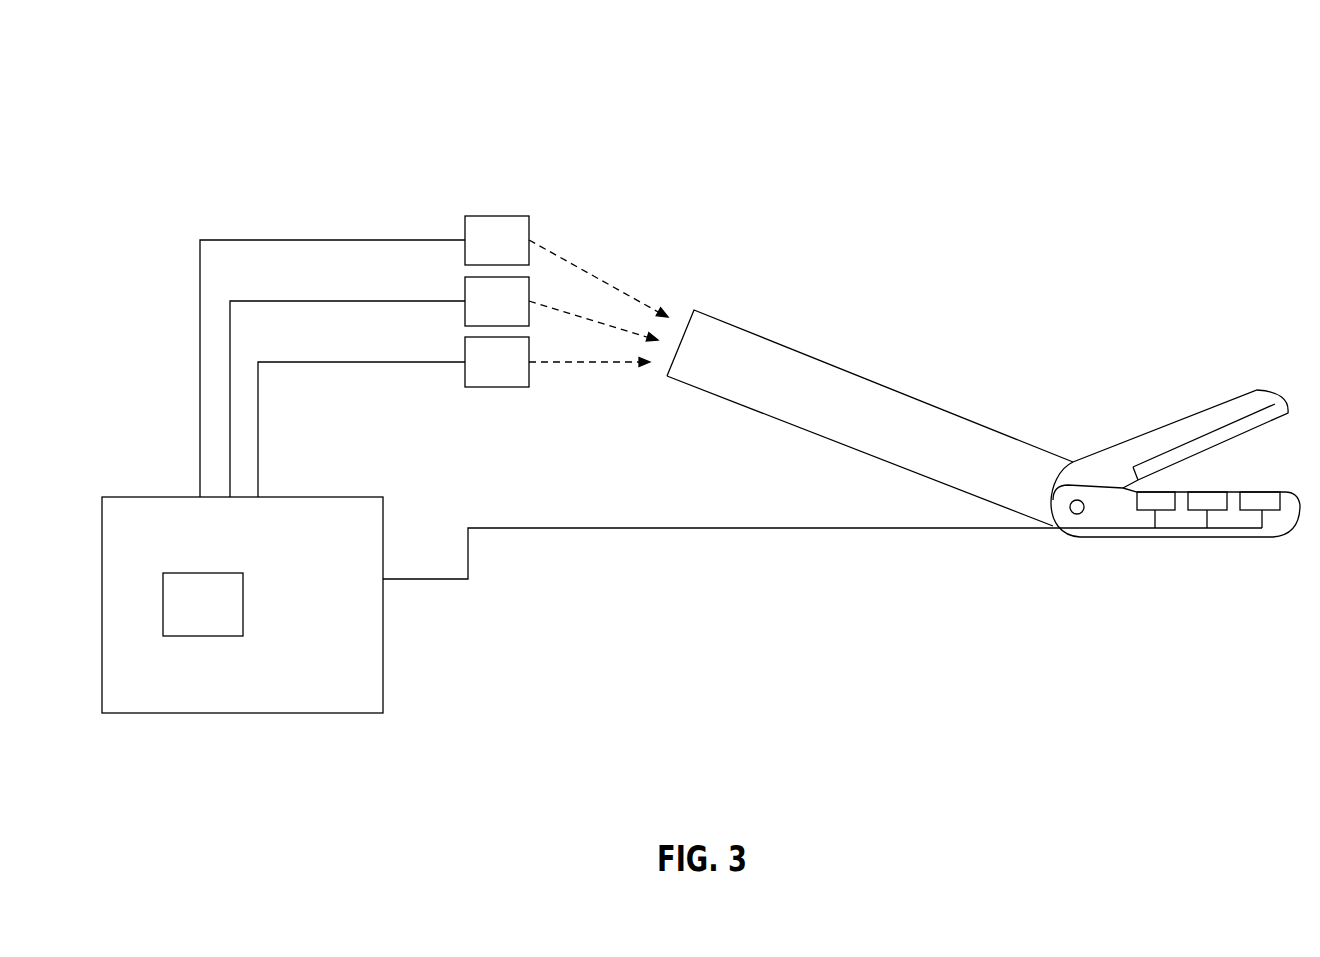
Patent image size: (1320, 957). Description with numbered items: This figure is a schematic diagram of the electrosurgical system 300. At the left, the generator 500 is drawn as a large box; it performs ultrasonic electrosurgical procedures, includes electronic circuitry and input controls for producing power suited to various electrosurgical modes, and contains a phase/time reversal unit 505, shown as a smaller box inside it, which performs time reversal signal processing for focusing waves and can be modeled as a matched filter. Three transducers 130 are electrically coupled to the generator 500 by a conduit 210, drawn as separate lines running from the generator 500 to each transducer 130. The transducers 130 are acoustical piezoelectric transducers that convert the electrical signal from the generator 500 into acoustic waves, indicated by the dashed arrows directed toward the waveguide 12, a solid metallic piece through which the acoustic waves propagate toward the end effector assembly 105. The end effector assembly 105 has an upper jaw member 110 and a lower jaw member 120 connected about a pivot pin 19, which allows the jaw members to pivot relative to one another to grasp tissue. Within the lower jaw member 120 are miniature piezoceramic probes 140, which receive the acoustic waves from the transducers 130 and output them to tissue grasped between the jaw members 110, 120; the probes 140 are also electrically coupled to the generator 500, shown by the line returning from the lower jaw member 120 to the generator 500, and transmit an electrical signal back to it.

The system 300 is at (838, 84).
The generator 500 is at (244, 715).
The phase/time reversal unit 505 is at (233, 604).
The conduit 210 is at (258, 380).
The transducers 130 is at (497, 362).
The waveguide 12 is at (882, 393).
The end effector assembly 105 is at (1162, 345).
The pivot pin 19 is at (1078, 500).
The upper jaw member 110 is at (1230, 398).
The lower jaw member 120 is at (1253, 540).
The probes 140 is at (1260, 493).